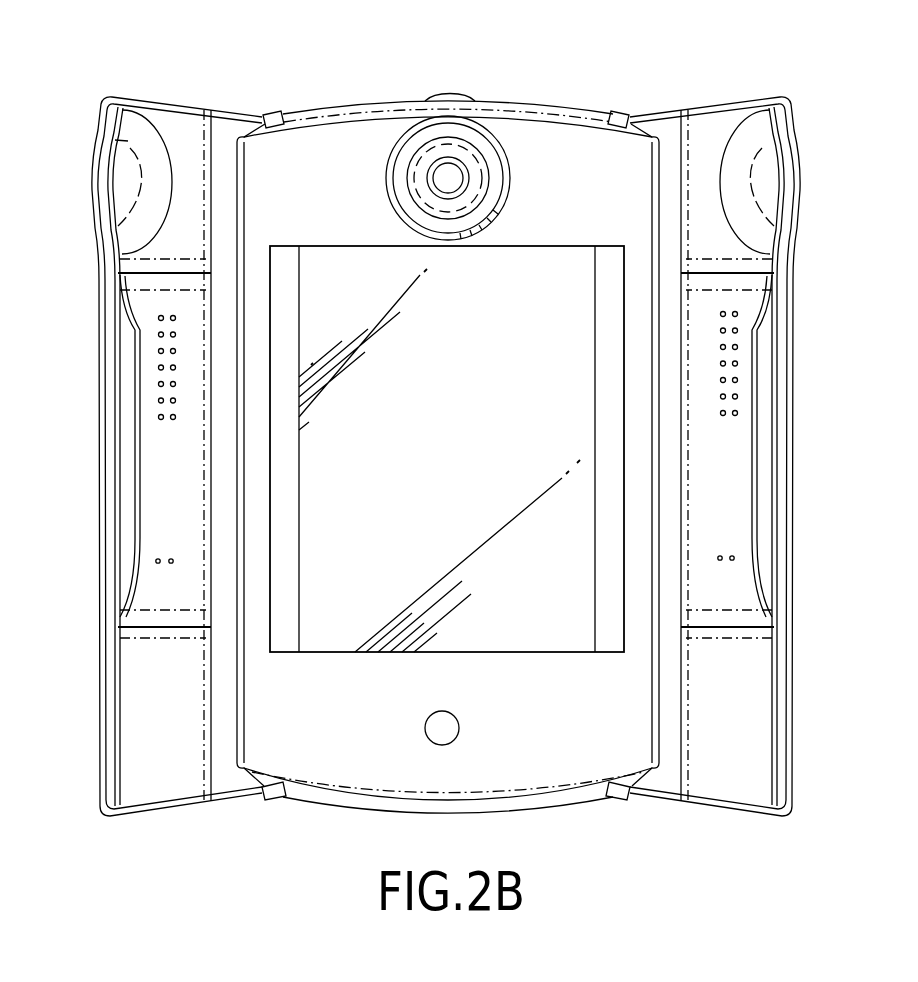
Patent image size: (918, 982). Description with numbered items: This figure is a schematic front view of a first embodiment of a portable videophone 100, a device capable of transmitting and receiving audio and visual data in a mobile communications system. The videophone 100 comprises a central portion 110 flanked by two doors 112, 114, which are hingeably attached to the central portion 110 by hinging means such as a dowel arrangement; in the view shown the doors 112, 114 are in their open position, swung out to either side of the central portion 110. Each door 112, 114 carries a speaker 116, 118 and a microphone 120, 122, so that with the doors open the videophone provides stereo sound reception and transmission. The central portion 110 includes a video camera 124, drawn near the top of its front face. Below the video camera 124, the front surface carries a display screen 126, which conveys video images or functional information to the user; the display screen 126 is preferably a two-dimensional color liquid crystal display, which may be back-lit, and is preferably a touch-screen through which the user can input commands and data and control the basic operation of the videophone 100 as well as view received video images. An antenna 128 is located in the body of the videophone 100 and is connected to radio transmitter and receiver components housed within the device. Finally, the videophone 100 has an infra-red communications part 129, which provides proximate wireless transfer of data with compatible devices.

The videophone 100 is at (737, 78).
The central portion 110 is at (327, 143).
The door 112 is at (185, 127).
The door 114 is at (717, 132).
The speaker 116 is at (158, 385).
The speaker 118 is at (736, 364).
The microphone 120 is at (157, 562).
The microphone 122 is at (733, 558).
The video camera 124 is at (476, 148).
The display screen 126 is at (360, 637).
The antenna 128 is at (432, 93).
The infra-red communications part 129 is at (436, 726).